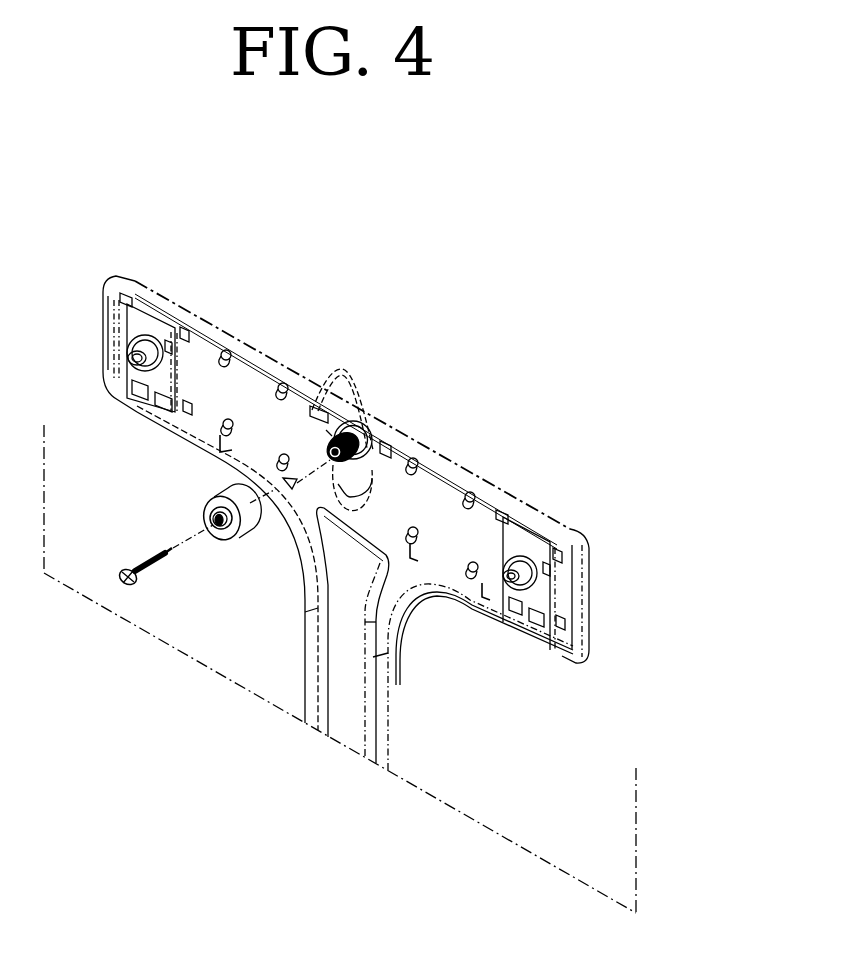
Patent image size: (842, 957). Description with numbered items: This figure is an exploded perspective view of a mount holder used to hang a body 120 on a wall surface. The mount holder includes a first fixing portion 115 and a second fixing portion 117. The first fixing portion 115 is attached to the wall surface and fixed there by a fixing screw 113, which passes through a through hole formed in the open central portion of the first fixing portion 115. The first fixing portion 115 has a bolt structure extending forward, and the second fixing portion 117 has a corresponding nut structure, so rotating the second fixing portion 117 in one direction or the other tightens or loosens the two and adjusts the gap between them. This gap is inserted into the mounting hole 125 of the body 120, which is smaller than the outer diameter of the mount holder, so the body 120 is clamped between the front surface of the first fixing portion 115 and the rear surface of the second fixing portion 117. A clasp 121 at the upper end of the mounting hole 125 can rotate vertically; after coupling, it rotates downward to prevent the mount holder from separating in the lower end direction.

The fixing screw 113 is at (150, 557).
The first fixing portion 115 is at (367, 436).
The second fixing portion 117 is at (225, 492).
The body 120 is at (582, 528).
The clasp 121 is at (357, 375).
The mounting hole 125 is at (378, 476).